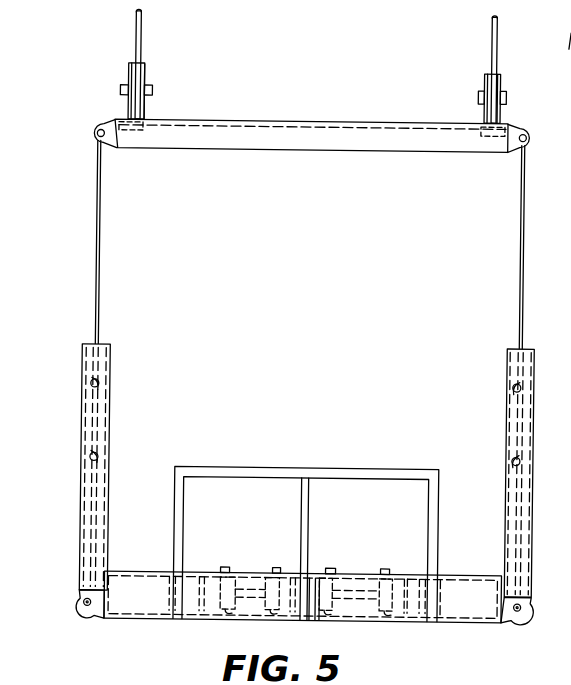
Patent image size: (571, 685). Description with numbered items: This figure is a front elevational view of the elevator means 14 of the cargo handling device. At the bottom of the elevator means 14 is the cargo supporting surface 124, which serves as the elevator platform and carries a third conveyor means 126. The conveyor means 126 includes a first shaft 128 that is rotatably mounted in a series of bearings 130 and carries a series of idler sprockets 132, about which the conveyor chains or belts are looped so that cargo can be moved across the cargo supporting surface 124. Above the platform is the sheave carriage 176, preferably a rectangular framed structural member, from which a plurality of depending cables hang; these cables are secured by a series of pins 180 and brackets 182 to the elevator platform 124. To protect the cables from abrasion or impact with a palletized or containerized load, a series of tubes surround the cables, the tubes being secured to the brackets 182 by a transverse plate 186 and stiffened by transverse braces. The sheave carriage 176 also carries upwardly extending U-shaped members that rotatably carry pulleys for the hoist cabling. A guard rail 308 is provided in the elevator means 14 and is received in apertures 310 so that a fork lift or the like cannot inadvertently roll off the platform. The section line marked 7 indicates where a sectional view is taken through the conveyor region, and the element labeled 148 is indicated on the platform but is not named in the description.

The elevator means 14 is at (106, 99).
The sheave carriage 176 is at (319, 139).
The pins 180 is at (86, 605).
The brackets 182 is at (98, 613).
The transverse plate 186 is at (82, 590).
The cargo supporting surface 124 is at (475, 571).
The housing 148 is at (486, 608).
The guard rail 308 is at (267, 467).
The first shaft 128 is at (250, 578).
The bearings 130 is at (206, 575).
The apertures 310 is at (166, 577).
The idler sprockets 132 is at (247, 621).
The third conveyor means 126 is at (322, 560).
The section line 7 is at (340, 362).